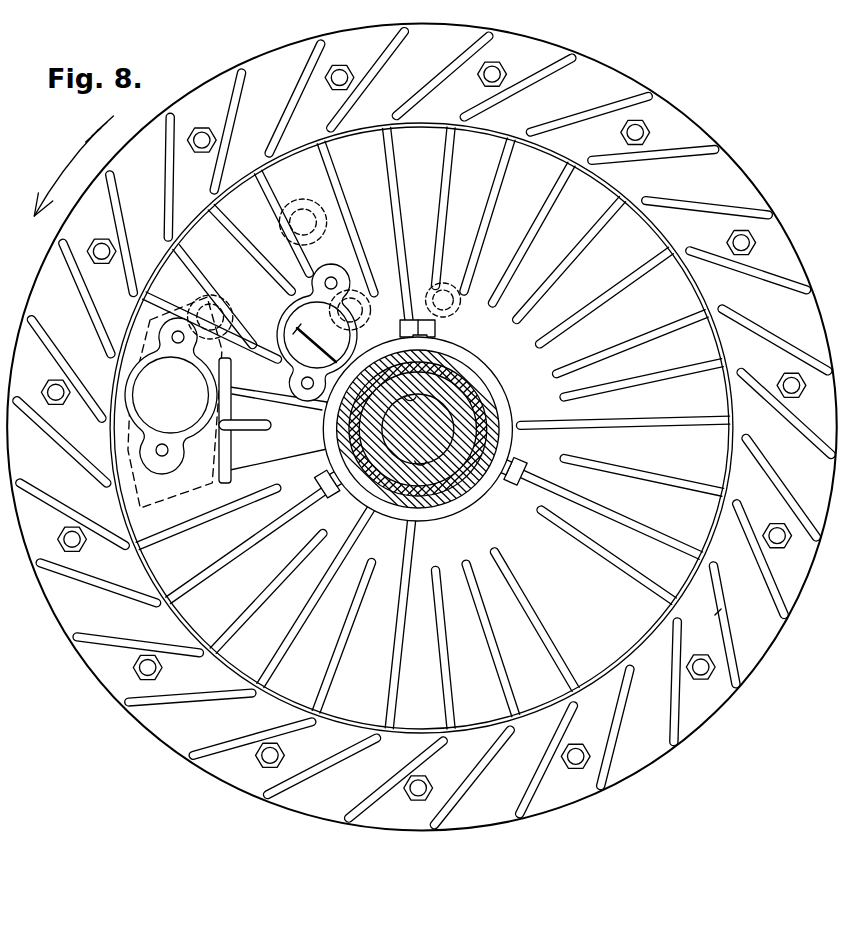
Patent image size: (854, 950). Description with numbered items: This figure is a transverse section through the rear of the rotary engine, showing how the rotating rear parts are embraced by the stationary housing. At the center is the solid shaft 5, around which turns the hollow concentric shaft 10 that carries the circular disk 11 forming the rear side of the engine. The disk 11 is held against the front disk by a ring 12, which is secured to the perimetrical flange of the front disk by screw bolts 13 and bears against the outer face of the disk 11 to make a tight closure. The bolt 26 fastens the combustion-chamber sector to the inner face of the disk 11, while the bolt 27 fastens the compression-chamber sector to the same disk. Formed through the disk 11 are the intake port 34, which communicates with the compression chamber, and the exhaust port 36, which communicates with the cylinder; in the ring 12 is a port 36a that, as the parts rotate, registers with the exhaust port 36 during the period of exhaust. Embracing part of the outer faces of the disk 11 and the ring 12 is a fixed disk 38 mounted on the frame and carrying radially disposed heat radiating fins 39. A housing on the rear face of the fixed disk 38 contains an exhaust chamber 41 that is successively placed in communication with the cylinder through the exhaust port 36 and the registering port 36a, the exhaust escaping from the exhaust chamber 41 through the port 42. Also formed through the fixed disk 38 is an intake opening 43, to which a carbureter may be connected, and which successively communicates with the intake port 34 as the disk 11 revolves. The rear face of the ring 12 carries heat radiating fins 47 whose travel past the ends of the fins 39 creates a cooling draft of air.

The solid shaft 5 is at (487, 372).
The hollow concentric shaft 10 is at (443, 463).
The circular disk 11 is at (311, 316).
The ring 12 is at (194, 73).
The screw bolts 13 is at (499, 69).
The bolt 26 is at (303, 212).
The bolt 27 is at (447, 288).
The intake port 34 is at (305, 351).
The exhaust port 36 is at (163, 427).
The port 36a is at (171, 395).
The fixed disk 38 is at (197, 613).
The heat radiating fins 39 is at (497, 170).
The exhaust chamber 41 is at (197, 455).
The port 42 is at (135, 382).
The intake opening 43 is at (297, 308).
The heat radiating fins 47 is at (717, 612).